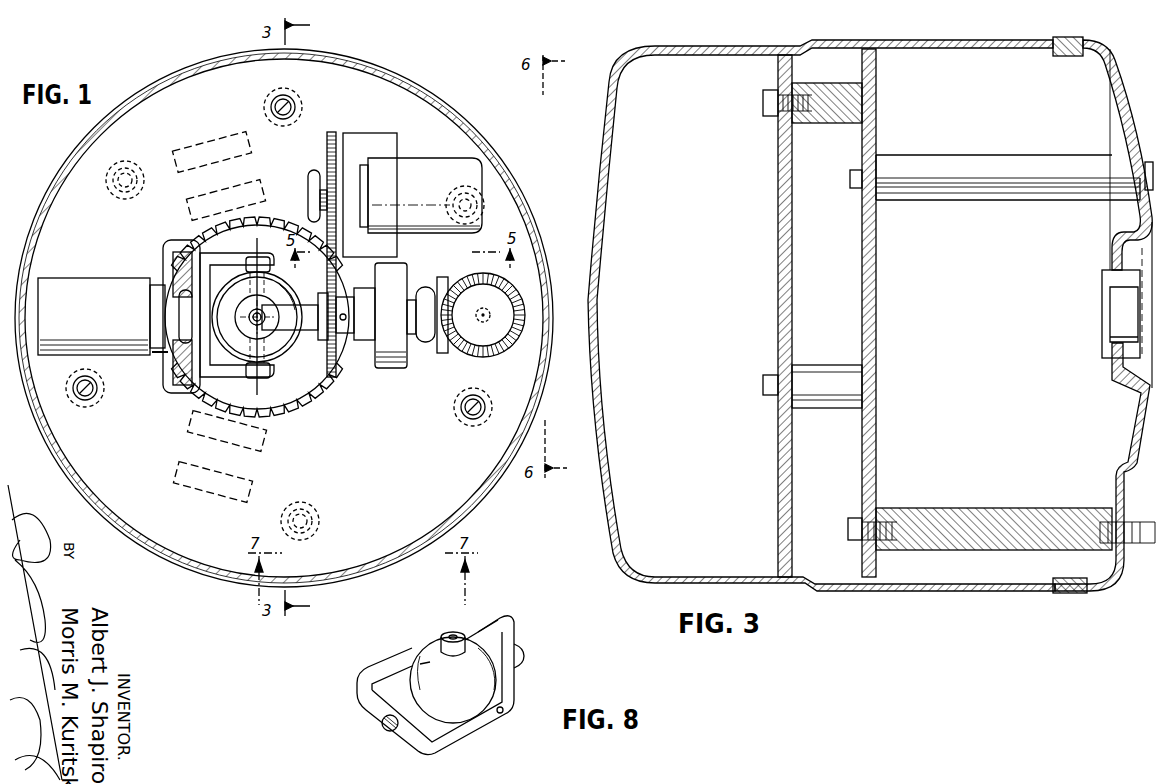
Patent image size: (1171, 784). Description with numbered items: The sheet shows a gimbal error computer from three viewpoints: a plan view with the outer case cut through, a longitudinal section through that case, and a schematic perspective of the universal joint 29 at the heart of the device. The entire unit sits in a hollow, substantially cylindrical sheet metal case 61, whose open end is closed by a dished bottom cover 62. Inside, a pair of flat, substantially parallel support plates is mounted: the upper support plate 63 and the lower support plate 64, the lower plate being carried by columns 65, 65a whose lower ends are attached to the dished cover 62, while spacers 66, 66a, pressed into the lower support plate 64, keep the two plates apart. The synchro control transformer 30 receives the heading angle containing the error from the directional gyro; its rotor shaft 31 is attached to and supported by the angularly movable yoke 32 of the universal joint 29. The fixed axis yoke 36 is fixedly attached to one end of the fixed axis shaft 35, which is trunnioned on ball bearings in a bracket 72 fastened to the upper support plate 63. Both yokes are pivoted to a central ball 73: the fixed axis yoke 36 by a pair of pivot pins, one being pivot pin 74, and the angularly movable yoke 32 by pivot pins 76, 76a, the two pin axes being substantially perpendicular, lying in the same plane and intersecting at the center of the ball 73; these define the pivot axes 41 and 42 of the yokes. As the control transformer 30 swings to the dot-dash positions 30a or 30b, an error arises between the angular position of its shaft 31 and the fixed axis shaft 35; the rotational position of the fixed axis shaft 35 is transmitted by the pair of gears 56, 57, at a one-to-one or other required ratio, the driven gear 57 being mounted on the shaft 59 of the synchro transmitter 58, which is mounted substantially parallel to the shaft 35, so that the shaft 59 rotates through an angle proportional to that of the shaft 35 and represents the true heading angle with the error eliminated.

In FIG. 1, the universal joint 29 is at (267, 324).
In FIG. 8, the universal joint 29 is at (455, 622).
In FIG. 1, the synchro control transformer 30 is at (108, 282).
In FIG. 1, the angularly displaced position of the synchro control transformer 30a is at (182, 482).
In FIG. 1, the angularly displaced position of the synchro control transformer 30b is at (222, 134).
In FIG. 1, the rotor shaft 31 is at (162, 354).
In FIG. 8, the rotor shaft 31 is at (386, 729).
In FIG. 1, the angularly movable yoke 32 is at (245, 372).
In FIG. 8, the angularly movable yoke 32 is at (356, 692).
In FIG. 1, the fixed axis shaft 35 is at (422, 290).
In FIG. 8, the fixed axis shaft 35 is at (522, 660).
In FIG. 1, the fixed axis yoke 36 is at (292, 305).
In FIG. 8, the fixed axis yoke 36 is at (480, 622).
In FIG. 1, the pivot axis 41 is at (250, 318).
In FIG. 1, the pivot axis 42 is at (256, 246).
In FIG. 1, the gear 56 is at (336, 366).
In FIG. 1, the driven gear 57 is at (330, 134).
In FIG. 1, the synchro transmitter 58 is at (444, 162).
In FIG. 1, the shaft of the synchro transmitter 59 is at (322, 198).
In FIG. 1, the case 61 is at (192, 560).
In FIG. 3, the case 61 is at (942, 590).
In FIG. 3, the dished bottom cover 62 is at (1118, 82).
In FIG. 3, the upper support plate 63 is at (777, 290).
In FIG. 3, the lower support plate 64 is at (877, 262).
In FIG. 3, the column 65 is at (978, 510).
In FIG. 3, the column 65a is at (968, 158).
In FIG. 3, the spacer 66 is at (826, 408).
In FIG. 3, the spacer 66a is at (820, 126).
In FIG. 1, the bracket 72 is at (400, 366).
In FIG. 1, the central ball 73 is at (236, 335).
In FIG. 8, the central ball 73 is at (430, 650).
In FIG. 8, the pivot pin 74 is at (453, 680).
In FIG. 1, the pivot pin 76 is at (282, 362).
In FIG. 8, the pivot pin 76 is at (500, 715).
In FIG. 1, the pivot pin 76a is at (250, 314).